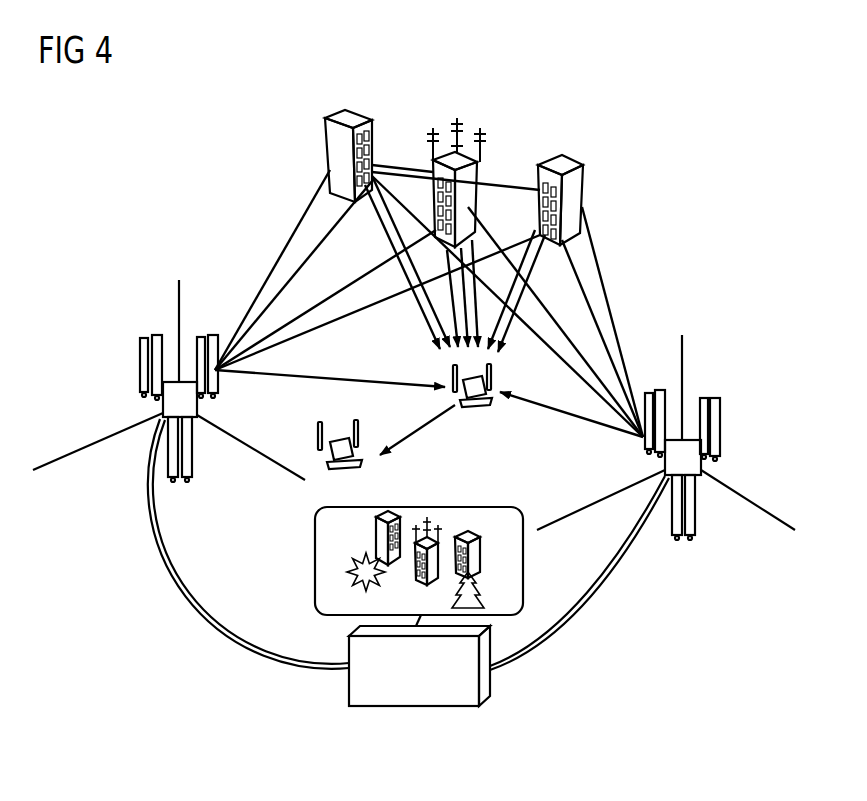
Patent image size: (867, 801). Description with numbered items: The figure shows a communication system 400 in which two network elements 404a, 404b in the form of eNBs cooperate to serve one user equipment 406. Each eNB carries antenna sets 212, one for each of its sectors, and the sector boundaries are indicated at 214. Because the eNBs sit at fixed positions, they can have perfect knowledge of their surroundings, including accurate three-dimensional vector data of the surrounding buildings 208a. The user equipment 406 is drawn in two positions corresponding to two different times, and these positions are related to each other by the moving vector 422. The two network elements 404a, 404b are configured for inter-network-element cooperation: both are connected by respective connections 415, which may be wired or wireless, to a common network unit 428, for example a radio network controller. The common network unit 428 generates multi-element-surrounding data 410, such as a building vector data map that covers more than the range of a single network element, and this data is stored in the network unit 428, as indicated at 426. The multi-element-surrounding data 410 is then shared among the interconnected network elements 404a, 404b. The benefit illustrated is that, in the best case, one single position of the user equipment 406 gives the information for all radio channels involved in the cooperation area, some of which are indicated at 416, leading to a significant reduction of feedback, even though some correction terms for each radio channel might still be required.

The communication system 400 is at (716, 103).
The surrounding buildings 208a is at (350, 113).
The radio channels 416 is at (396, 158).
The sector boundaries 214 is at (181, 298).
The antenna sets 212 is at (152, 333).
The network element 404a is at (163, 400).
The network element 404b is at (703, 462).
The user equipment 406 is at (340, 438).
The moving vector 422 is at (419, 436).
The multi-element-surrounding data 410 is at (314, 569).
The storage of multi-element-surrounding data 426 is at (414, 630).
The common network unit 428 is at (410, 708).
The connections 415 is at (174, 602).